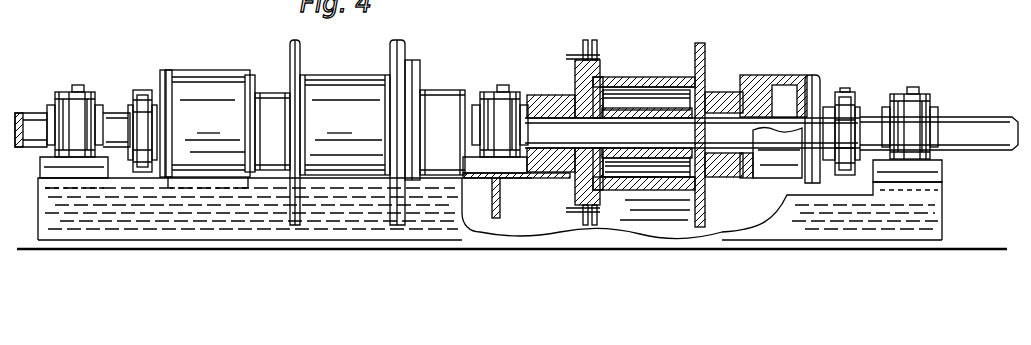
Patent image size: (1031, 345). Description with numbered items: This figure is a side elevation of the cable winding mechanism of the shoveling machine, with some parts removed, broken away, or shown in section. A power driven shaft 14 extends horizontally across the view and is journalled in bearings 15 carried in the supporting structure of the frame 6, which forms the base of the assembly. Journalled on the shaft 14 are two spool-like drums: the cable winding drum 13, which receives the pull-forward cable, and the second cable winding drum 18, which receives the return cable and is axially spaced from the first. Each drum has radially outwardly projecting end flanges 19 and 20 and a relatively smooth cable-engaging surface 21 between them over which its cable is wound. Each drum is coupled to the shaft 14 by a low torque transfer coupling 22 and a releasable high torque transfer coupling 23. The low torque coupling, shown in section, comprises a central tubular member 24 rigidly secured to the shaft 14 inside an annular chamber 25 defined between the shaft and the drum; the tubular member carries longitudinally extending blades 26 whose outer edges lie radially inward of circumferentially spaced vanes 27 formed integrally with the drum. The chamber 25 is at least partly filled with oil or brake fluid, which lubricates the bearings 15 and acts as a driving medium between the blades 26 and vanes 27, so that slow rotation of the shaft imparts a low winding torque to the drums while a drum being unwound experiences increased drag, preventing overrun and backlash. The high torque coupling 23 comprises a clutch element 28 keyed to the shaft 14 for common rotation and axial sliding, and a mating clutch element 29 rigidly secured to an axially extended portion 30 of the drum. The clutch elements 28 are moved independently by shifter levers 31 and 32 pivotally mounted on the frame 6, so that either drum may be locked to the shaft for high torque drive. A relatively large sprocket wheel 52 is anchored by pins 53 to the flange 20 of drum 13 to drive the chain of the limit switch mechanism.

The frame 6 is at (437, 240).
The cable winding drum 13 is at (621, 80).
The power driven shaft 14 is at (117, 125).
The bearings 15 is at (76, 85).
The second cable winding drum 18 is at (345, 125).
The end flange 19 is at (291, 42).
The end flange 20 is at (402, 42).
The cable-engaging surface 21 is at (340, 88).
The low torque transfer coupling 22 is at (652, 100).
The releasable high torque transfer coupling 23 is at (197, 78).
The central tubular member 24 is at (620, 153).
The annular chamber 25 is at (630, 157).
The blades 26 is at (642, 163).
The vanes 27 is at (662, 173).
The clutch element 28 is at (170, 72).
The clutch element 29 is at (760, 80).
The axially extended portion 30 is at (270, 110).
The shifter lever 31 is at (849, 98).
The shifter lever 32 is at (143, 90).
The sprocket wheel 52 is at (588, 42).
The pins 53 is at (568, 55).